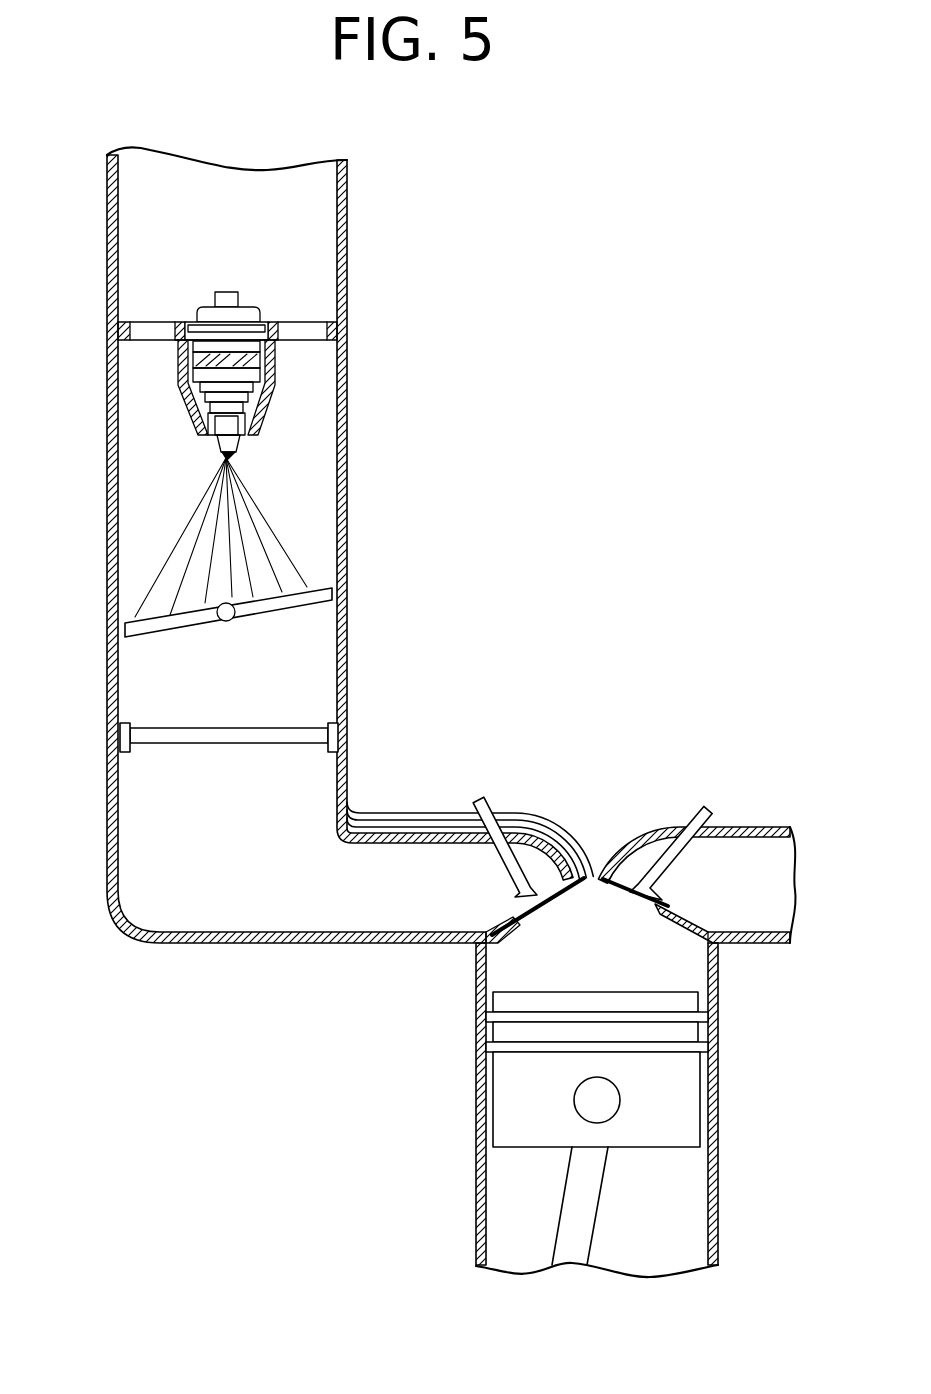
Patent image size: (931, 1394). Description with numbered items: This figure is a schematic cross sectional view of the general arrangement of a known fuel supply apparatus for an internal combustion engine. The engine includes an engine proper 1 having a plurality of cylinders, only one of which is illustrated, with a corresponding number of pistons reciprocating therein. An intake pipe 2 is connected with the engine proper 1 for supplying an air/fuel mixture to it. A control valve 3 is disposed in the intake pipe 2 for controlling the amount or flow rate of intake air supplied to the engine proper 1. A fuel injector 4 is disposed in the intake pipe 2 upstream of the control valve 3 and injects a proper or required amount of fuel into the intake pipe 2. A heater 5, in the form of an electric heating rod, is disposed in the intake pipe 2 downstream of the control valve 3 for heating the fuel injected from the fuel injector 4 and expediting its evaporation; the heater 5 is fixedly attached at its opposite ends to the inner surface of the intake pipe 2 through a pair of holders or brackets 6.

The engine proper 1 is at (786, 1112).
The intake pipe 2 is at (293, 944).
The control valve 3 is at (330, 587).
The fuel injector 4 is at (253, 312).
The heater 5 is at (300, 733).
The holders or brackets 6 is at (120, 737).